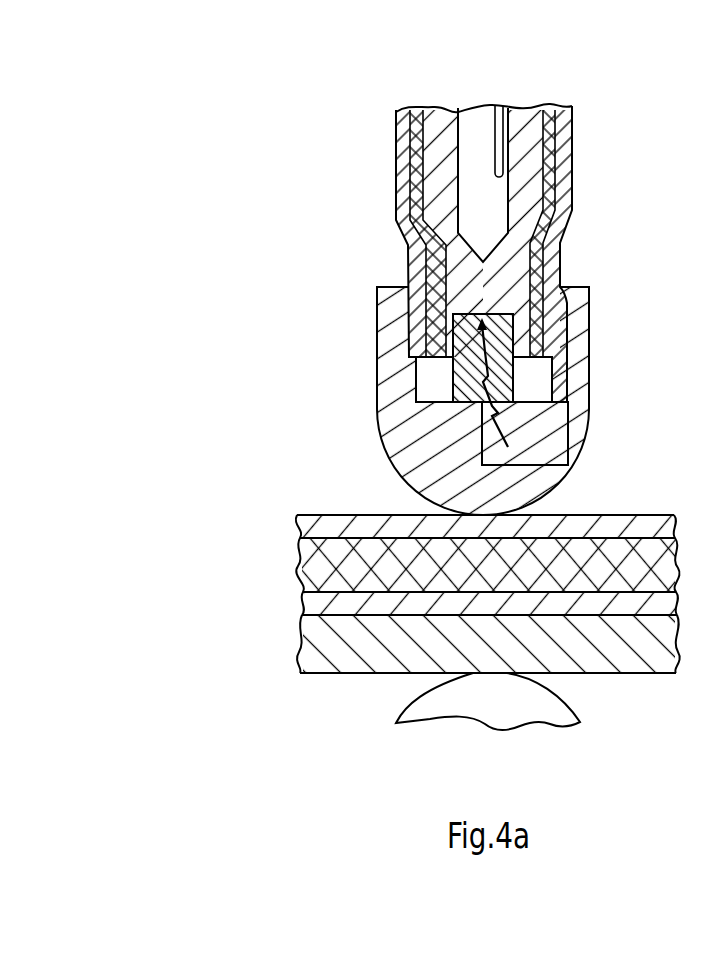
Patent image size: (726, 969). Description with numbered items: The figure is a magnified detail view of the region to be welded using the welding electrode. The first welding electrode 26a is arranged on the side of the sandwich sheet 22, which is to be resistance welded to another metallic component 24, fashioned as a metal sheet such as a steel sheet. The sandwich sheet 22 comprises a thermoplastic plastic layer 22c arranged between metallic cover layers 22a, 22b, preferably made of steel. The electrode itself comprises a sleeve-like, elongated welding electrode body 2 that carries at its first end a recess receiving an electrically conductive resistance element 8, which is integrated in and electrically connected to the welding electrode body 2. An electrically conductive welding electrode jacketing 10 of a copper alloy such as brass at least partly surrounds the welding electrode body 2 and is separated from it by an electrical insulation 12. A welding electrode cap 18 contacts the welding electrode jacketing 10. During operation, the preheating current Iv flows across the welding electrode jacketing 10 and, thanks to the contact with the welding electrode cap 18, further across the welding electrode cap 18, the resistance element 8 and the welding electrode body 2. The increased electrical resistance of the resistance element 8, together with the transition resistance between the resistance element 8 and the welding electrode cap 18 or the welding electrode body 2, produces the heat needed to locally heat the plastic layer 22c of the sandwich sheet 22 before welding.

The welding electrode body 2 is at (525, 138).
The resistance element 8 is at (462, 385).
The welding electrode jacketing 10 is at (396, 142).
The electrical insulation 12 is at (415, 115).
The welding electrode cap 18 is at (412, 360).
The sandwich sheet 22 is at (220, 428).
The metallic cover layer 22a is at (340, 528).
The metallic cover layer 22b is at (340, 607).
The thermoplastic plastic layer 22c is at (317, 560).
The metallic component 24 is at (228, 725).
The first welding electrode 26a is at (263, 162).
The preheating current Iv is at (555, 400).